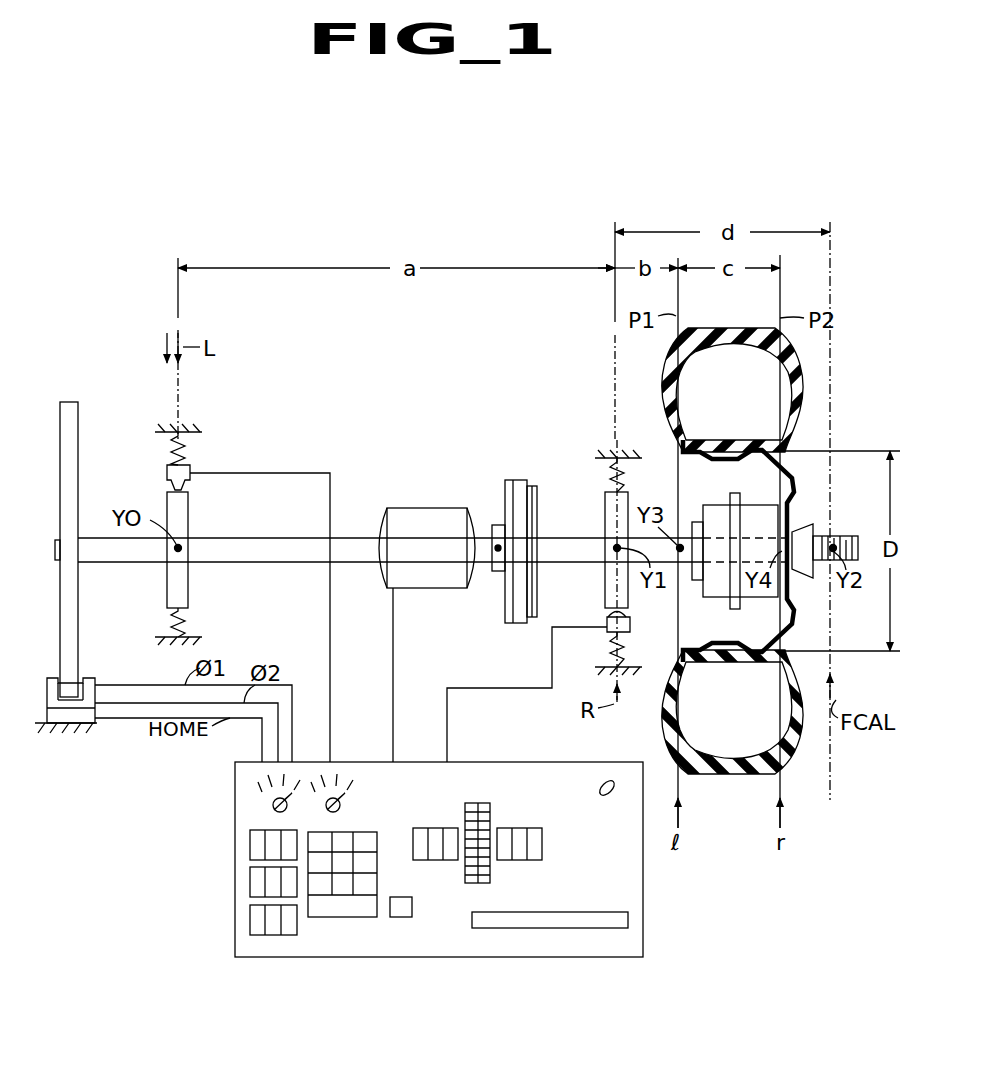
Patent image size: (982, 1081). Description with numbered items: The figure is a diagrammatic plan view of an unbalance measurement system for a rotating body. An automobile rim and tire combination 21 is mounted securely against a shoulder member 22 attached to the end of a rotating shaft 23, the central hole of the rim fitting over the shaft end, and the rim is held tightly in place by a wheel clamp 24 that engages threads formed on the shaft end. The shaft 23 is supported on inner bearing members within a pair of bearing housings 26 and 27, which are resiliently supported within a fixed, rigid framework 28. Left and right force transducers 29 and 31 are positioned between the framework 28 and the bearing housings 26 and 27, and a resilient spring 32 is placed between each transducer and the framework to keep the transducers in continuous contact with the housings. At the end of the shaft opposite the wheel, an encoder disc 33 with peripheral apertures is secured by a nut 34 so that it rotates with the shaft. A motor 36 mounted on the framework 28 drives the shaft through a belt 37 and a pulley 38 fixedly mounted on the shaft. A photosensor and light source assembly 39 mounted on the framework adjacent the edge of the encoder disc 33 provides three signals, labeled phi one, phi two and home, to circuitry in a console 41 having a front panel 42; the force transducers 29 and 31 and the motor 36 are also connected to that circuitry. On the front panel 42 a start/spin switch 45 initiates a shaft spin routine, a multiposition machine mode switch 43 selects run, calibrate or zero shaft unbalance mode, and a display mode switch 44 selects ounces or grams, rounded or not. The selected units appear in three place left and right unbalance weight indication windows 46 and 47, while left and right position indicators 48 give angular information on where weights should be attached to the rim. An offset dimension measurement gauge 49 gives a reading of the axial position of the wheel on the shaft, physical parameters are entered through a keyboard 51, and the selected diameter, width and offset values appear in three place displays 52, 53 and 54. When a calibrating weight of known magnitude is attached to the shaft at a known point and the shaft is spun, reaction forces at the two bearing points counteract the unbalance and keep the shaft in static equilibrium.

The rim and tire combination 21 is at (786, 482).
The shoulder member 22 is at (762, 510).
The rotating shaft 23 is at (850, 543).
The wheel clamp 24 is at (806, 530).
The bearing housing 26 is at (167, 583).
The bearing housing 27 is at (604, 502).
The framework 28 is at (45, 722).
The left force transducer 29 is at (166, 471).
The right force transducer 31 is at (631, 624).
The resilient spring 32 is at (174, 440).
The encoder disc 33 is at (75, 408).
The nut 34 is at (57, 555).
The motor 36 is at (420, 588).
The belt 37 is at (516, 480).
The pulley 38 is at (500, 490).
The photosensor and light source assembly 39 is at (48, 690).
The console 41 is at (643, 873).
The front panel 42 is at (598, 897).
The machine mode switch 43 is at (272, 805).
The display mode switch 44 is at (340, 800).
The start/spin switch 45 is at (602, 783).
The left unbalance weight indication window 46 is at (438, 858).
The right unbalance weight indication window 47 is at (505, 858).
The left and right position indicators 48 is at (490, 800).
The offset dimension measurement gauge 49 is at (620, 920).
The keyboard 51 is at (333, 917).
The diameter display 52 is at (249, 845).
The width display 53 is at (249, 883).
The offset display 54 is at (249, 920).